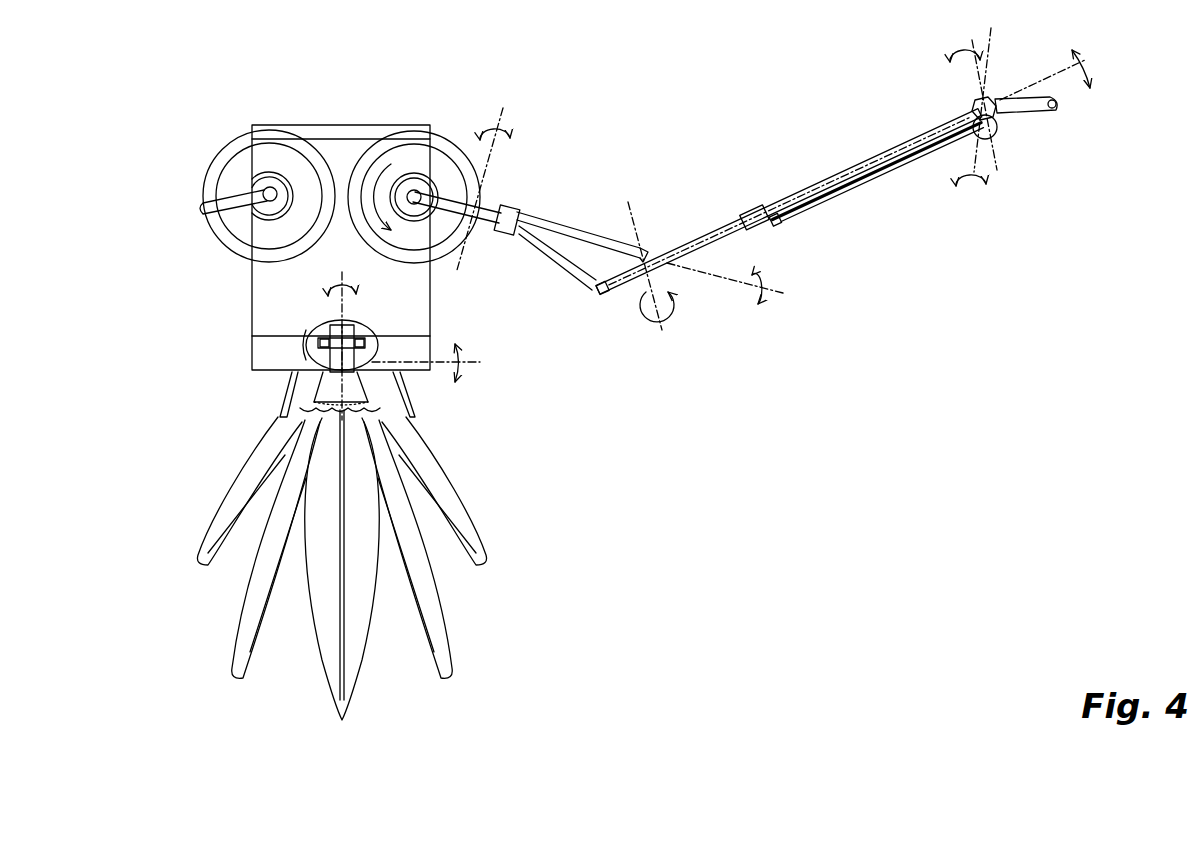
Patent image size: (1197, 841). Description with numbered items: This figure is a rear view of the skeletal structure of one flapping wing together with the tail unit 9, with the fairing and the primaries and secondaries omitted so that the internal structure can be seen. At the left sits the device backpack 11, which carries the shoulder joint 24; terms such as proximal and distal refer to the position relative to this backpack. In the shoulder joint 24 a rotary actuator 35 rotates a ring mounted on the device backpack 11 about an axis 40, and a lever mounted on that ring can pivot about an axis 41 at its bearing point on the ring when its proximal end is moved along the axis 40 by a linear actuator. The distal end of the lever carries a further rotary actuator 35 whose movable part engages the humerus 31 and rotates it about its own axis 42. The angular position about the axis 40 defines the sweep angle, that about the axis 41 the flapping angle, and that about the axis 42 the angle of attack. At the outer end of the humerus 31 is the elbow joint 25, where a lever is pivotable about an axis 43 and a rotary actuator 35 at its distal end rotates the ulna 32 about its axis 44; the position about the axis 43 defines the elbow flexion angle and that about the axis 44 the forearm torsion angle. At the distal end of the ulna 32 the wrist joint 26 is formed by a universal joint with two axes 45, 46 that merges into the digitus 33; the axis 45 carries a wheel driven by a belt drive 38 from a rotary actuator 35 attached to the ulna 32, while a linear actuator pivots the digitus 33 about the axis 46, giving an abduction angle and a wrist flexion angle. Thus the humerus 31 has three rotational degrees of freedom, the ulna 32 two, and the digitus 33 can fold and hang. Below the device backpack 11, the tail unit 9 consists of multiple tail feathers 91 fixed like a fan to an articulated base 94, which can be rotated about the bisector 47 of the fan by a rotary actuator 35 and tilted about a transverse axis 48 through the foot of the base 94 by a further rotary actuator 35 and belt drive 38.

The tail unit 9 is at (341, 565).
The device backpack 11 is at (352, 125).
The shoulder joint 24 is at (455, 120).
The elbow joint 25 is at (796, 229).
The wrist joint 26 is at (962, 100).
The humerus 31 is at (598, 225).
The ulna 32 is at (812, 185).
The digitus 33 is at (1037, 117).
The rotary actuator 35 is at (512, 208).
The belt drive 38 is at (312, 352).
The axis 40 is at (391, 206).
The axis 41 is at (490, 178).
The axis 42 is at (738, 286).
The axis 43 is at (657, 322).
The axis 44 is at (1056, 68).
The axis 45 is at (972, 95).
The axis 46 is at (971, 200).
The bisector 47 is at (345, 335).
The transverse axis 48 is at (441, 363).
The tail feather 91 is at (487, 567).
The articulated base 94 is at (337, 393).